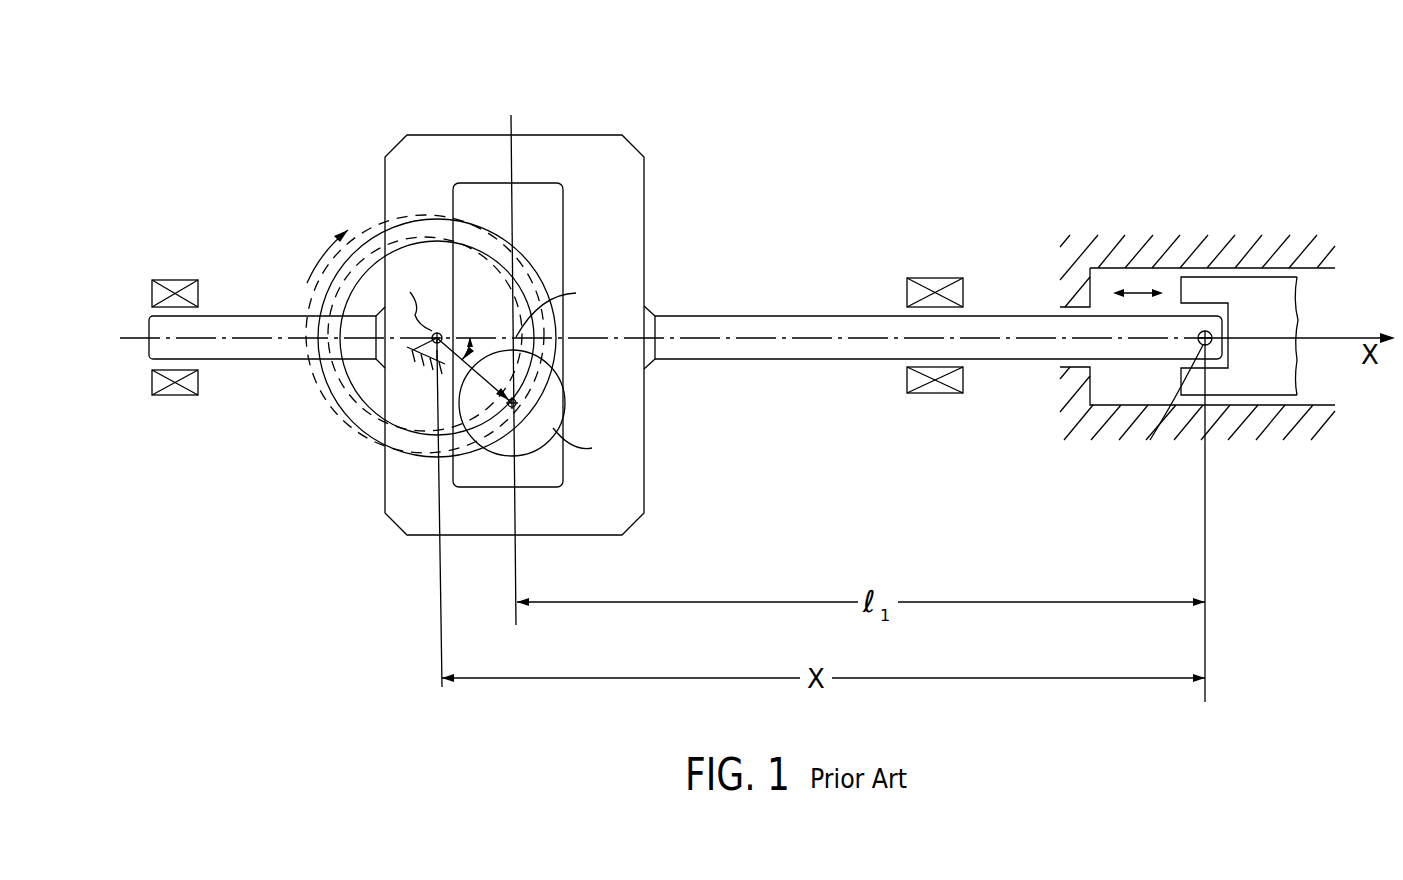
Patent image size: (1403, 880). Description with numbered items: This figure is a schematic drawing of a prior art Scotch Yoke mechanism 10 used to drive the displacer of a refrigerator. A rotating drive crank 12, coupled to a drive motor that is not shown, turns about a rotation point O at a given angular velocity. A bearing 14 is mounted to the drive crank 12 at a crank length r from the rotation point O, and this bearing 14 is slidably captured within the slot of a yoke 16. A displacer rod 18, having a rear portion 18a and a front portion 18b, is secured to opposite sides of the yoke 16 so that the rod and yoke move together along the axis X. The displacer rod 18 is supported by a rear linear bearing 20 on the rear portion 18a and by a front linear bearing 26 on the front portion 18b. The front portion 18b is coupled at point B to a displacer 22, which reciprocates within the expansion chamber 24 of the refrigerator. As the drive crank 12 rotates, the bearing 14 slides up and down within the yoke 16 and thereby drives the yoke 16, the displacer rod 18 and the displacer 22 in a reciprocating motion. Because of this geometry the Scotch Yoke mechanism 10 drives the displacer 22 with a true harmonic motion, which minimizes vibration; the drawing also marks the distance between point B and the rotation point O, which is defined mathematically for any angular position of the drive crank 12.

The Scotch Yoke mechanism 10 is at (835, 112).
The rotating drive crank 12 is at (350, 423).
The bearing 14 is at (553, 402).
The yoke 16 is at (547, 135).
The displacer rod 18 is at (247, 347).
The rear portion 18a is at (237, 322).
The front portion 18b is at (813, 318).
The rear linear bearing 20 is at (177, 397).
The displacer 22 is at (1275, 305).
The expansion chamber 24 is at (1235, 220).
The front linear bearing 26 is at (943, 393).